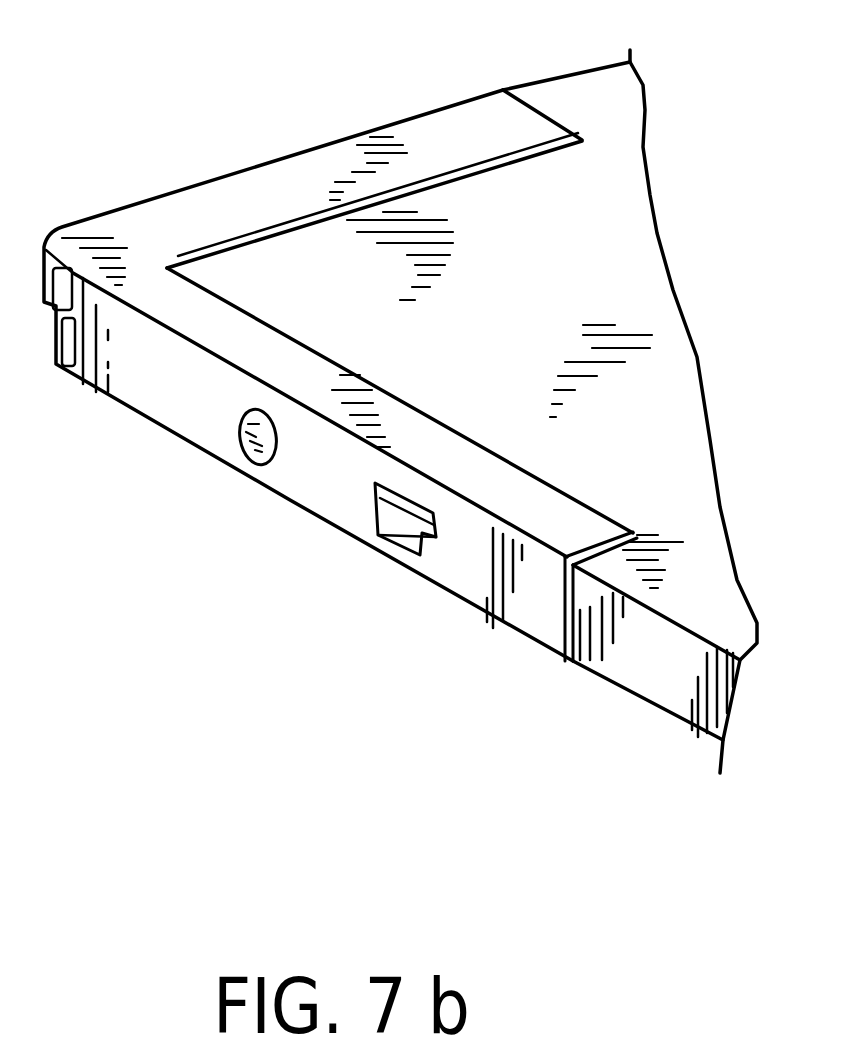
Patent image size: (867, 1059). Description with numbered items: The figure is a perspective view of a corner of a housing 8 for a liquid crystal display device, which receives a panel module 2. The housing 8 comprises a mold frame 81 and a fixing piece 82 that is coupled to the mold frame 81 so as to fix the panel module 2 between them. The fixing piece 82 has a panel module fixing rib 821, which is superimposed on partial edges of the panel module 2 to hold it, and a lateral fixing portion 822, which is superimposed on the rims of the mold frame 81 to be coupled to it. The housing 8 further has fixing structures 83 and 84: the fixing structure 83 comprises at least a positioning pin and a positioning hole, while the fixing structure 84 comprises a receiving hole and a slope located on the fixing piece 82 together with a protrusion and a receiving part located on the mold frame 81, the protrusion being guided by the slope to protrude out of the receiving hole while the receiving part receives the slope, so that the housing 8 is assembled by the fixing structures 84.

The panel module 2 is at (640, 247).
The housing 8 is at (263, 693).
The mold frame 81 is at (652, 680).
The fixing piece 82 is at (148, 387).
The panel module fixing rib 821 is at (420, 140).
The lateral fixing portion 822 is at (530, 620).
The fixing structure 83 is at (252, 457).
The fixing structure 84 is at (397, 533).